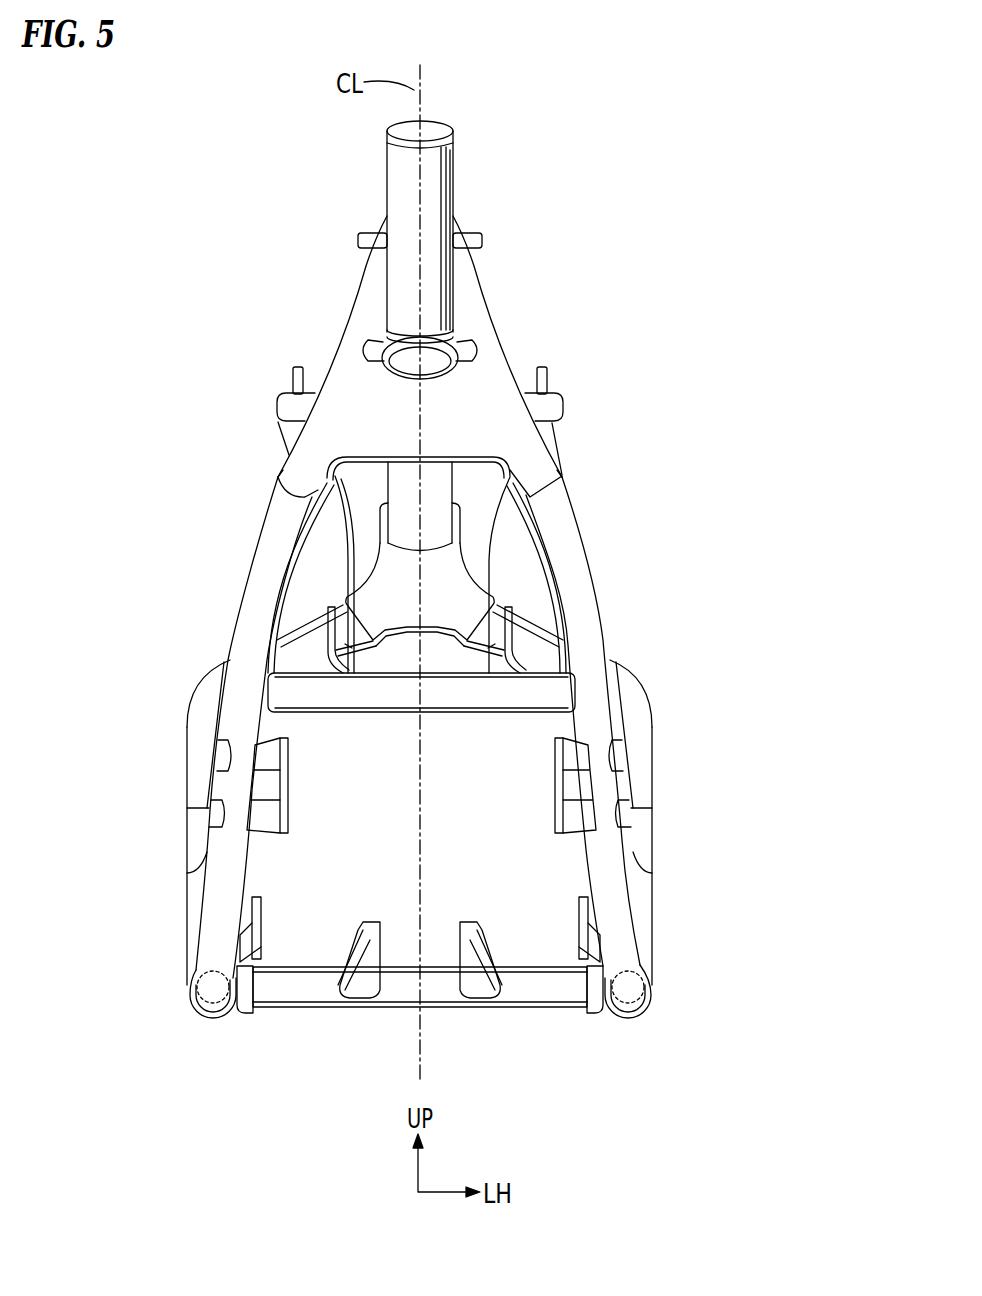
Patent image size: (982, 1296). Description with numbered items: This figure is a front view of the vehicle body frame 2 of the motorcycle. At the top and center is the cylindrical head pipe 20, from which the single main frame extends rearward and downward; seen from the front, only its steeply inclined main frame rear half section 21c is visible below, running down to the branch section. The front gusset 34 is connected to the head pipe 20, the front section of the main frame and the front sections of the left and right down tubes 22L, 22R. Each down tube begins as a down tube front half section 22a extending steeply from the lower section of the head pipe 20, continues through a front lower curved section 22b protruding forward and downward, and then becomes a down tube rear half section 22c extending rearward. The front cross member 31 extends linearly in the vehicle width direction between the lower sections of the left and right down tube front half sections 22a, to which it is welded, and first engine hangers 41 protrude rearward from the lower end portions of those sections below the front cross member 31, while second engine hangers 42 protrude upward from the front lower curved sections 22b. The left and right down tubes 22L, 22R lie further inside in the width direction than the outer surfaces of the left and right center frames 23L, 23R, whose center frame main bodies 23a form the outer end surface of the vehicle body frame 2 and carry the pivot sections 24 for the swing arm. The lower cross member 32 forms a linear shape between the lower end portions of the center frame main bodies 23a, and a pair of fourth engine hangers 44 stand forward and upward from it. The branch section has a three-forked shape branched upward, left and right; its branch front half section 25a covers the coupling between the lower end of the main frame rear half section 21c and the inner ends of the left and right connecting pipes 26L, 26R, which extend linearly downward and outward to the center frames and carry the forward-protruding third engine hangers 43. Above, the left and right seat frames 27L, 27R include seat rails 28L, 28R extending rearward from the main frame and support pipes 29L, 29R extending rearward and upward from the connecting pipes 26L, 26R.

The vehicle body frame 2 is at (654, 149).
The head pipe 20 is at (440, 175).
The front gusset 34 is at (472, 315).
The right seat frame 27R is at (270, 390).
The left seat frame 27L is at (570, 390).
The right seat rail 28R is at (297, 369).
The left seat rail 28L is at (541, 369).
The main frame rear half section 21c is at (444, 480).
The branch front half section 25a is at (457, 565).
The down tube front half section 22a is at (270, 520).
The right down tube 22R is at (233, 596).
The left down tube 22L is at (610, 598).
The right support pipe 29R is at (327, 567).
The left support pipe 29L is at (505, 568).
The right connecting pipe 26R is at (308, 637).
The left connecting pipe 26L is at (535, 632).
The third engine hanger 43 is at (348, 647).
The front cross member 31 is at (496, 703).
The right center frame 23R is at (180, 775).
The left center frame 23L is at (660, 775).
The center frame main body 23a is at (197, 793).
The pivot section 24 is at (196, 845).
The first engine hanger 41 is at (290, 790).
The second engine hanger 42 is at (262, 898).
The fourth engine hanger 44 is at (372, 918).
The front lower curved section 22b is at (205, 980).
The down tube rear half section 22c is at (205, 1005).
The lower cross member 32 is at (306, 1008).